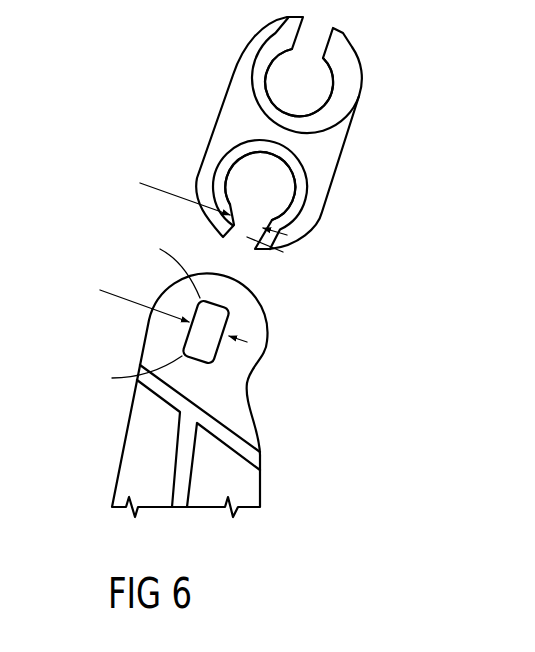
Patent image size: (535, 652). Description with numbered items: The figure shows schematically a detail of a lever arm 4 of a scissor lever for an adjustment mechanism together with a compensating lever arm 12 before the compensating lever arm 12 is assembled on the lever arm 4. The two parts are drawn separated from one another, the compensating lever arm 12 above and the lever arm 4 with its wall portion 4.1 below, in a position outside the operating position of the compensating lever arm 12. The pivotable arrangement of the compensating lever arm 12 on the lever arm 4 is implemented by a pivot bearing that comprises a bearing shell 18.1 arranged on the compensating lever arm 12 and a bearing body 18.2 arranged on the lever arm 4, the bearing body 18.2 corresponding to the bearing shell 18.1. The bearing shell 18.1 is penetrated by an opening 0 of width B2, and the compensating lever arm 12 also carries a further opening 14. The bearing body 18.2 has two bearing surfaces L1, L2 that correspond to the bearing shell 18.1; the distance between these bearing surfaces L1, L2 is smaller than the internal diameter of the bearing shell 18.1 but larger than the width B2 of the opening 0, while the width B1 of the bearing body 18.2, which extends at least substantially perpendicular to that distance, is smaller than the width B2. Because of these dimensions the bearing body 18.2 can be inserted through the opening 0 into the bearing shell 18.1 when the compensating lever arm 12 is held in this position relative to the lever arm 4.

The compensating lever arm 12 is at (237, 115).
The opening 14 is at (317, 84).
The bearing shell 18.1 is at (293, 193).
The bearing body 18.2 is at (210, 345).
The lever arm 4 is at (240, 484).
The housing wall 4.1 is at (140, 461).
The opening 0 is at (270, 250).
The width of the bearing body B1 is at (173, 305).
The width of the opening B2 is at (213, 200).
The bearing surface L1 is at (164, 263).
The bearing surface L2 is at (133, 375).